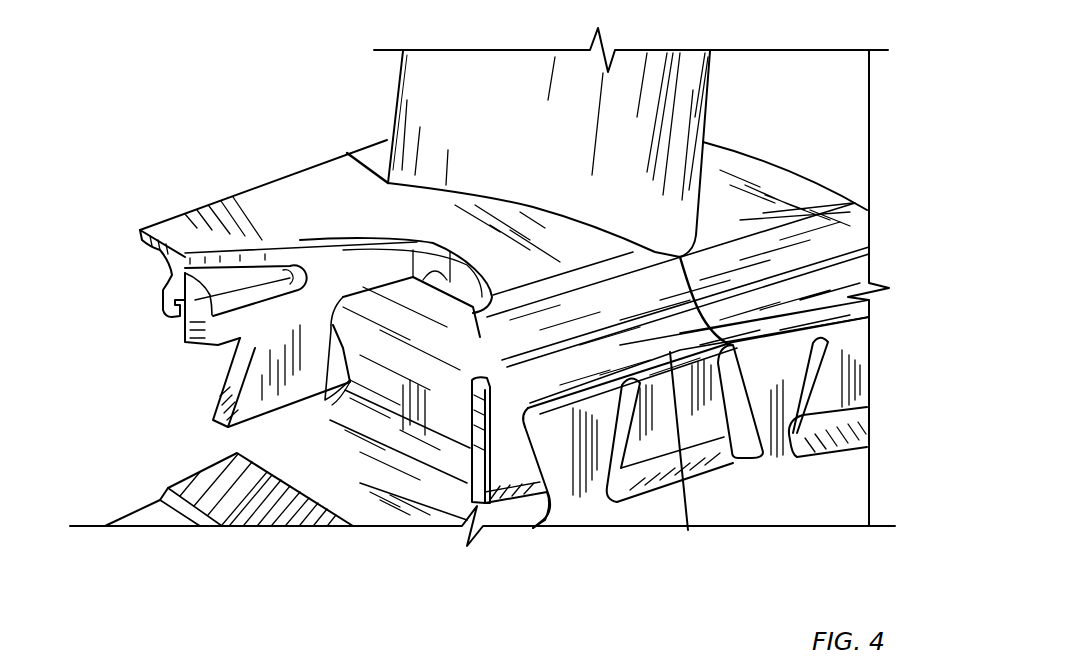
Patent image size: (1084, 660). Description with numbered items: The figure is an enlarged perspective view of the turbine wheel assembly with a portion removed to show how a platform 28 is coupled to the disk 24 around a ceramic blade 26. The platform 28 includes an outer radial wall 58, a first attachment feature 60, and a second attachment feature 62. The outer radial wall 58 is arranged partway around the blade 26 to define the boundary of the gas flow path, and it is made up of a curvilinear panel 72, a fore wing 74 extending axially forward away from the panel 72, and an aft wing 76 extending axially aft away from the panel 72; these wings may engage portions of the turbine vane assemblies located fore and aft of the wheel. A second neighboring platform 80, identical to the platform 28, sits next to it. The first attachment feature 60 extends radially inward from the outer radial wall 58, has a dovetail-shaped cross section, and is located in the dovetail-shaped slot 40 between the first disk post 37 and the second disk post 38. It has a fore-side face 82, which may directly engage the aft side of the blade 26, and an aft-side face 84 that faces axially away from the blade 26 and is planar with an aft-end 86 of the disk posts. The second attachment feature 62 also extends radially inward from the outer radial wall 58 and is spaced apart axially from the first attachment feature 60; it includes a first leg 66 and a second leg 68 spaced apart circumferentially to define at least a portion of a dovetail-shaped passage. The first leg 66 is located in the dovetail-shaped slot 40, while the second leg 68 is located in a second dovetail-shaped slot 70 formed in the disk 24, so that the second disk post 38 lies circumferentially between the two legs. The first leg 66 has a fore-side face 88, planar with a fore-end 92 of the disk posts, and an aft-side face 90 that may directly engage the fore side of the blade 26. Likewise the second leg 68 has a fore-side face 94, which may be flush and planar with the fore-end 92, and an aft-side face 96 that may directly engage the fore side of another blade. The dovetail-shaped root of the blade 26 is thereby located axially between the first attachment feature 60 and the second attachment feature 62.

The disk 24 is at (857, 506).
The blade 26 is at (470, 80).
The platform 28 is at (128, 88).
The first disk post 37 is at (587, 453).
The second disk post 38 is at (796, 388).
The dovetail-shaped slot 40 is at (420, 510).
The outer radial wall 58 is at (323, 183).
The first attachment feature 60 is at (136, 366).
The second attachment feature 62 is at (696, 454).
The first leg 66 is at (527, 475).
The second leg 68 is at (688, 530).
The second dovetail-shaped slot 70 is at (702, 480).
The curvilinear panel 72 is at (432, 224).
The fore wing 74 is at (727, 352).
The aft wing 76 is at (222, 195).
The second neighboring platform 80 is at (798, 152).
The fore-side face 82 is at (335, 376).
The aft-side face 84 is at (213, 388).
The aft-end 86 is at (188, 476).
The fore-side face 88 is at (497, 478).
The aft-side face 90 is at (470, 453).
The fore-end 92 is at (566, 447).
The fore-side face 94 is at (660, 385).
The aft-side face 96 is at (652, 452).